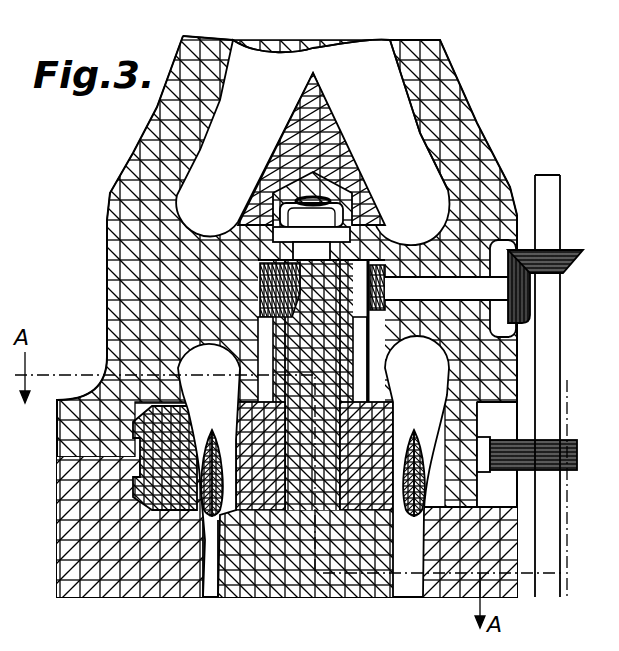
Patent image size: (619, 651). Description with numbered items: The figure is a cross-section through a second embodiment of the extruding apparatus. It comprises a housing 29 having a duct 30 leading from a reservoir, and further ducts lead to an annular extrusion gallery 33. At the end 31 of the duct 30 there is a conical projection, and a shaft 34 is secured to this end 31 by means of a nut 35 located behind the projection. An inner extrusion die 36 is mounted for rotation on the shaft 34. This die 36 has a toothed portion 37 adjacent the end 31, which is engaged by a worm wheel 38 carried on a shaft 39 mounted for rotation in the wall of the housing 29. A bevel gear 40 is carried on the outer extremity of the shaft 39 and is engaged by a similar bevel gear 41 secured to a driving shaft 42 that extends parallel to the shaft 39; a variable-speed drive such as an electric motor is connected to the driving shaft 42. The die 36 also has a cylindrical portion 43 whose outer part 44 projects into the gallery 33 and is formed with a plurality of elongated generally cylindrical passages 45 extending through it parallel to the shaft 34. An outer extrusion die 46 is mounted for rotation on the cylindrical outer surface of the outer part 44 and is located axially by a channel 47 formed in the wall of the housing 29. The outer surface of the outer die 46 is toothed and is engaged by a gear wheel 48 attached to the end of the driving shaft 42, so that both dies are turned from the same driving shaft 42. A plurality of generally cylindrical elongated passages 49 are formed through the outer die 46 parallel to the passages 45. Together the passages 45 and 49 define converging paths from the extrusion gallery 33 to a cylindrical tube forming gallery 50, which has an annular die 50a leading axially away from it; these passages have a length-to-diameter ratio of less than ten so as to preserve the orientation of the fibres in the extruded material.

The housing 29 is at (108, 215).
The duct 30 is at (373, 62).
The end of the duct 31 is at (413, 157).
The annular extrusion gallery 33 is at (317, 104).
The shaft 34 is at (338, 583).
The nut 35 is at (303, 204).
The inner extrusion die 36 is at (365, 498).
The toothed portion 37 is at (378, 228).
The worm wheel 38 is at (373, 270).
The shaft 39 is at (493, 292).
The bevel gear 40 is at (520, 317).
The bevel gear 41 is at (565, 248).
The driving shaft 42 is at (543, 410).
The cylindrical portion 43 is at (252, 490).
The outer part 44 is at (203, 530).
The elongated generally cylindrical passages 45 is at (422, 518).
The outer extrusion die 46 is at (177, 430).
The channel 47 is at (143, 423).
The gear wheel 48 is at (548, 468).
The elongated passages 49 is at (432, 447).
The tube forming gallery 50 is at (420, 535).
The annular die 50a is at (212, 590).